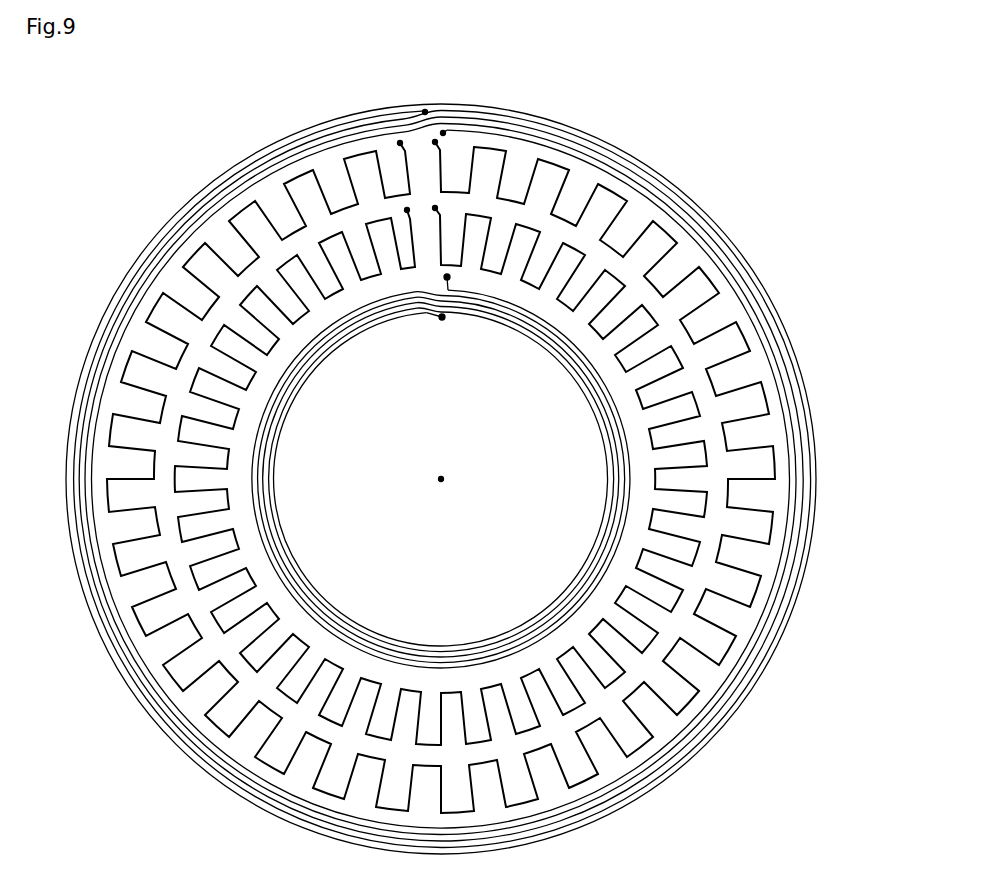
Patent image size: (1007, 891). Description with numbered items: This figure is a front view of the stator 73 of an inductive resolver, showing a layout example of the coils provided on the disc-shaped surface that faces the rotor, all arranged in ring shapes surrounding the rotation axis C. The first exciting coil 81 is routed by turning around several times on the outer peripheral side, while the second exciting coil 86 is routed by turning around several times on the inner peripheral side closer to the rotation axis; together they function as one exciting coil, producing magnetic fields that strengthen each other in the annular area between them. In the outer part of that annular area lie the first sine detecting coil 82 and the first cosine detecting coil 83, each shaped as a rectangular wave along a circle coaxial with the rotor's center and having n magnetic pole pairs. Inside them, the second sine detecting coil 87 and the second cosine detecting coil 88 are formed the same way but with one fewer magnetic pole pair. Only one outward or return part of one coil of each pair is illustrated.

The stator 73 is at (794, 188).
The first exciting coil 81 is at (822, 432).
The first sine detecting coil 82 is at (735, 303).
The first cosine detecting coil 83 is at (441, 477).
The second exciting coil 86 is at (597, 467).
The second sine detecting coil 87 is at (612, 360).
The second cosine detecting coil 88 is at (441, 476).